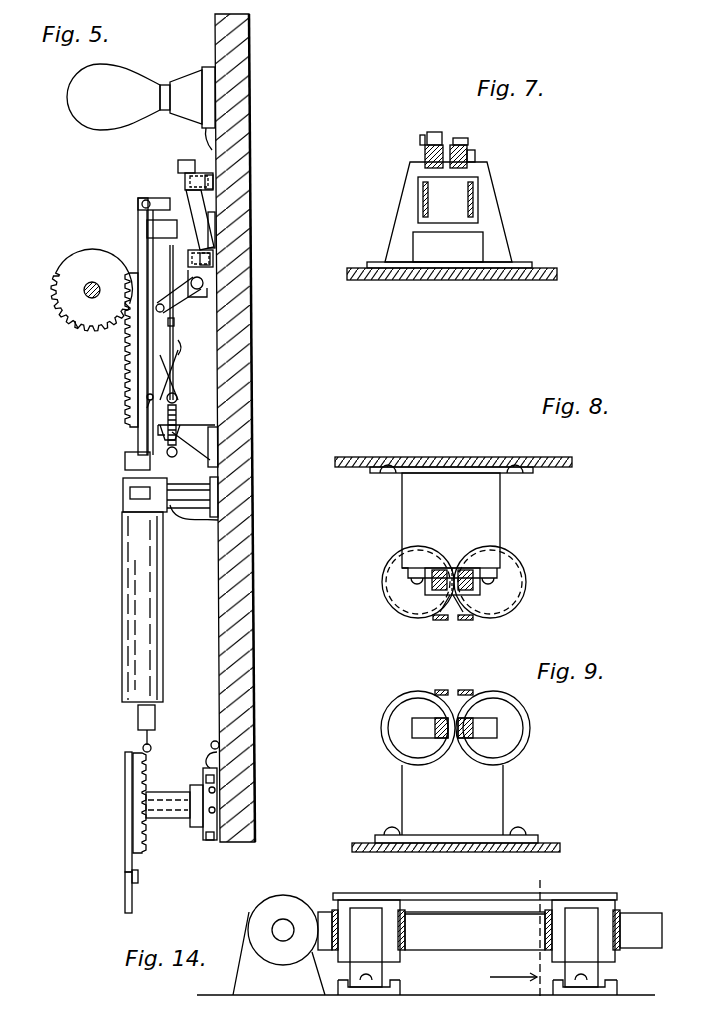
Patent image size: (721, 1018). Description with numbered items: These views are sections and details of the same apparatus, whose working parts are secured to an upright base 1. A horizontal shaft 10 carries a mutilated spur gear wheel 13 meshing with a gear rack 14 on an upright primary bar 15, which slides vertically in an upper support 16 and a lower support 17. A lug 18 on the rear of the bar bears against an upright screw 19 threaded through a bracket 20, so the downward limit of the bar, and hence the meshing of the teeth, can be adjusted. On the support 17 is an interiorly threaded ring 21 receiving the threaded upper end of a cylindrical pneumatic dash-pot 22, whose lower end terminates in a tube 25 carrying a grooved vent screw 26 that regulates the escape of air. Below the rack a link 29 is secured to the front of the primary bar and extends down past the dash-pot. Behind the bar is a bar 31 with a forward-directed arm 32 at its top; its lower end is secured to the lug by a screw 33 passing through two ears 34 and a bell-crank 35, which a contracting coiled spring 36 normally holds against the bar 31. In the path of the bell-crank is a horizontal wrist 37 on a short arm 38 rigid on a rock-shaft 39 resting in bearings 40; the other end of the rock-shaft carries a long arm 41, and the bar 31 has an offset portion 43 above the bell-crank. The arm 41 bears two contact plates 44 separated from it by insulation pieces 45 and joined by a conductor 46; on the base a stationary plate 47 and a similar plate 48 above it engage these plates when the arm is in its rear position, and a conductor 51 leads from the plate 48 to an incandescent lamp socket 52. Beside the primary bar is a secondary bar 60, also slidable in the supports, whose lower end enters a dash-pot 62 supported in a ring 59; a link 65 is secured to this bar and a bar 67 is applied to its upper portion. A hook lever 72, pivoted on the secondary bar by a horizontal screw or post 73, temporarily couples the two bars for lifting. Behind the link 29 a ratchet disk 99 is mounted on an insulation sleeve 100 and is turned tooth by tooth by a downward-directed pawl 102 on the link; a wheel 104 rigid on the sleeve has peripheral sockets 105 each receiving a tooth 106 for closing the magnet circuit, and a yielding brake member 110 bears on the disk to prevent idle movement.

In FIG. 5, the upright base 1 is at (246, 575).
In FIG. 7, the upright base 1 is at (525, 278).
In FIG. 8, the upright base 1 is at (436, 440).
In FIG. 9, the upright base 1 is at (550, 850).
In FIG. 5, the horizontal shaft 10 is at (85, 296).
In FIG. 5, the mutilated spur gear wheel 13 is at (74, 330).
In FIG. 5, the gear rack 14 is at (130, 366).
In FIG. 7, the gear rack 14 is at (466, 138).
In FIG. 5, the primary bar 15 is at (142, 372).
In FIG. 7, the primary bar 15 is at (470, 152).
In FIG. 8, the primary bar 15 is at (478, 578).
In FIG. 9, the primary bar 15 is at (490, 722).
In FIG. 14, the primary bar 15 is at (520, 940).
In FIG. 7, the upper support 16 is at (488, 182).
In FIG. 5, the lower support 17 is at (218, 522).
In FIG. 7, the lower support 17 is at (498, 240).
In FIG. 8, the lower support 17 is at (492, 533).
In FIG. 9, the lower support 17 is at (490, 801).
In FIG. 5, the lug 18 is at (160, 390).
In FIG. 5, the upright screw 19 is at (210, 455).
In FIG. 5, the bracket 20 is at (210, 440).
In FIG. 5, the interiorly screw-threaded ring 21 is at (128, 510).
In FIG. 8, the interiorly screw-threaded ring 21 is at (512, 602).
In FIG. 9, the interiorly screw-threaded ring 21 is at (530, 728).
In FIG. 5, the pneumatic dash-pot 22 is at (136, 548).
In FIG. 9, the pneumatic dash-pot 22 is at (530, 740).
In FIG. 5, the tube 25 is at (156, 722).
In FIG. 5, the vent screw 26 is at (152, 746).
In FIG. 5, the link 29 is at (128, 488).
In FIG. 8, the link 29 is at (465, 622).
In FIG. 9, the link 29 is at (470, 690).
In FIG. 5, the bar 31 is at (176, 321).
In FIG. 7, the bar 31 is at (474, 203).
In FIG. 5, the forward-directed arm 32 is at (153, 199).
In FIG. 5, the screw 33 is at (176, 412).
In FIG. 5, the ears 34 is at (178, 399).
In FIG. 5, the bell-crank 35 is at (172, 375).
In FIG. 5, the contracting coiled spring 36 is at (147, 400).
In FIG. 5, the wrist 37 is at (175, 320).
In FIG. 5, the short arm 38 is at (165, 308).
In FIG. 5, the rock-shaft 39 is at (203, 282).
In FIG. 14, the rock-shaft 39 is at (280, 928).
In FIG. 5, the bearings 40 is at (206, 292).
In FIG. 14, the bearings 40 is at (279, 953).
In FIG. 5, the long arm 41 is at (197, 215).
In FIG. 14, the long arm 41 is at (490, 931).
In FIG. 5, the offset portion 43 is at (180, 332).
In FIG. 5, the metallic contact plates 44 is at (185, 182).
In FIG. 14, the metallic contact plates 44 is at (368, 905).
In FIG. 14, the insulation pieces 45 is at (334, 910).
In FIG. 5, the conductor 46 is at (183, 210).
In FIG. 14, the conductor 46 is at (443, 893).
In FIG. 5, the stationary contact plate 47 is at (210, 258).
In FIG. 14, the stationary contact plate 47 is at (366, 947).
In FIG. 5, the contact plate 48 is at (213, 182).
In FIG. 14, the contact plate 48 is at (581, 947).
In FIG. 5, the conductor 51 is at (210, 142).
In FIG. 5, the incandescent lamp socket 52 is at (208, 80).
In FIG. 8, the ring 59 is at (405, 600).
In FIG. 7, the secondary bar 60 is at (425, 157).
In FIG. 8, the secondary bar 60 is at (412, 582).
In FIG. 9, the secondary bar 60 is at (430, 728).
In FIG. 9, the dash-pot 62 is at (381, 728).
In FIG. 8, the link 65 is at (445, 621).
In FIG. 9, the link 65 is at (441, 690).
In FIG. 7, the bar 67 is at (422, 205).
In FIG. 7, the hook lever 72 is at (424, 135).
In FIG. 7, the horizontal screw or post 73 is at (438, 132).
In FIG. 5, the ratchet disk 99 is at (145, 848).
In FIG. 5, the insulation sleeve 100 is at (175, 820).
In FIG. 5, the pawl 102 is at (125, 890).
In FIG. 5, the wheel 104 is at (210, 840).
In FIG. 5, the sockets 105 is at (216, 792).
In FIG. 5, the tooth 106 is at (206, 779).
In FIG. 5, the yielding brake member 110 is at (216, 768).